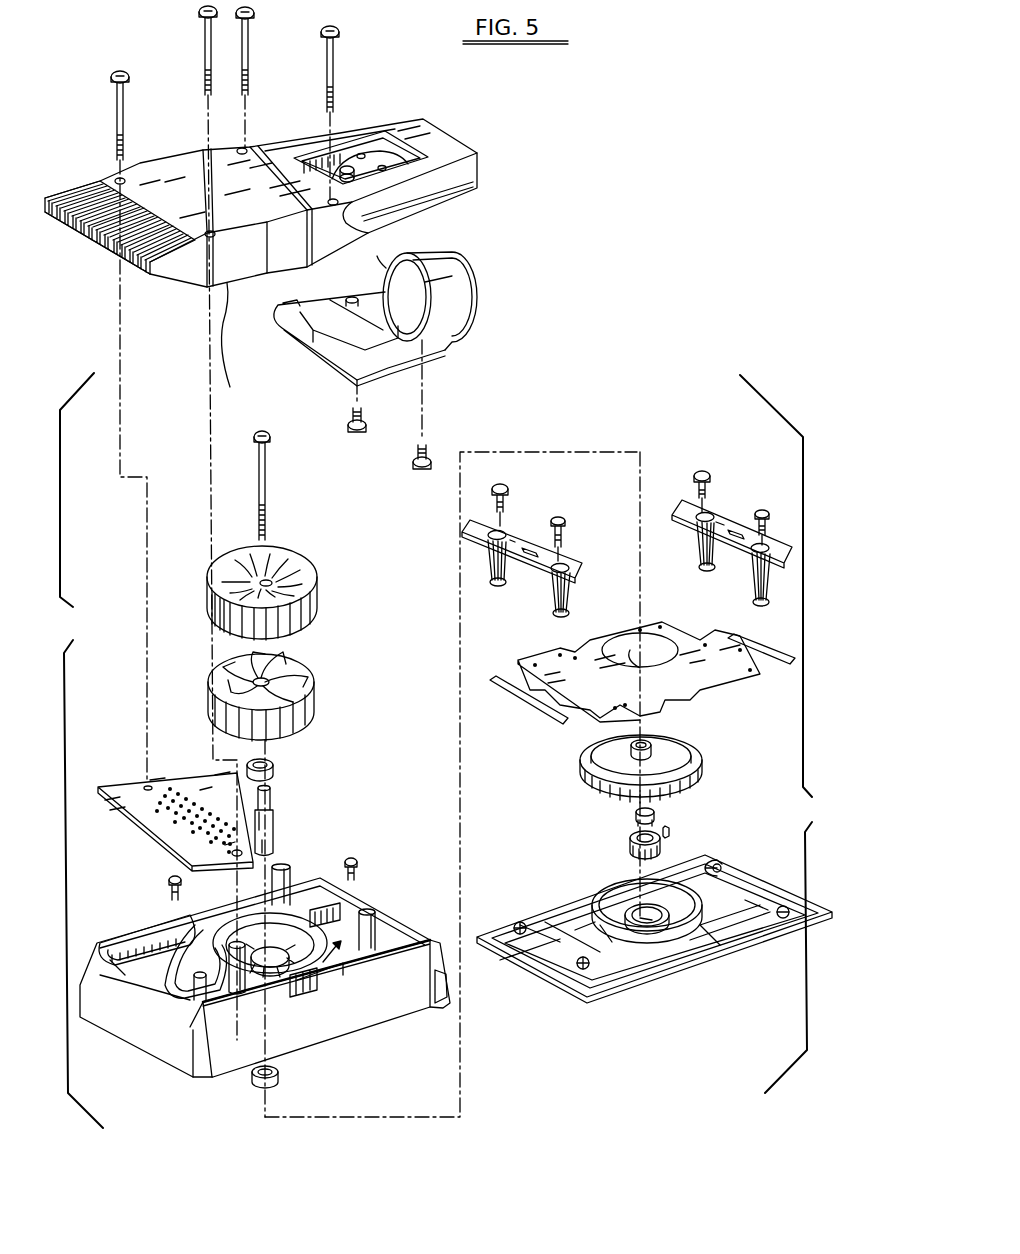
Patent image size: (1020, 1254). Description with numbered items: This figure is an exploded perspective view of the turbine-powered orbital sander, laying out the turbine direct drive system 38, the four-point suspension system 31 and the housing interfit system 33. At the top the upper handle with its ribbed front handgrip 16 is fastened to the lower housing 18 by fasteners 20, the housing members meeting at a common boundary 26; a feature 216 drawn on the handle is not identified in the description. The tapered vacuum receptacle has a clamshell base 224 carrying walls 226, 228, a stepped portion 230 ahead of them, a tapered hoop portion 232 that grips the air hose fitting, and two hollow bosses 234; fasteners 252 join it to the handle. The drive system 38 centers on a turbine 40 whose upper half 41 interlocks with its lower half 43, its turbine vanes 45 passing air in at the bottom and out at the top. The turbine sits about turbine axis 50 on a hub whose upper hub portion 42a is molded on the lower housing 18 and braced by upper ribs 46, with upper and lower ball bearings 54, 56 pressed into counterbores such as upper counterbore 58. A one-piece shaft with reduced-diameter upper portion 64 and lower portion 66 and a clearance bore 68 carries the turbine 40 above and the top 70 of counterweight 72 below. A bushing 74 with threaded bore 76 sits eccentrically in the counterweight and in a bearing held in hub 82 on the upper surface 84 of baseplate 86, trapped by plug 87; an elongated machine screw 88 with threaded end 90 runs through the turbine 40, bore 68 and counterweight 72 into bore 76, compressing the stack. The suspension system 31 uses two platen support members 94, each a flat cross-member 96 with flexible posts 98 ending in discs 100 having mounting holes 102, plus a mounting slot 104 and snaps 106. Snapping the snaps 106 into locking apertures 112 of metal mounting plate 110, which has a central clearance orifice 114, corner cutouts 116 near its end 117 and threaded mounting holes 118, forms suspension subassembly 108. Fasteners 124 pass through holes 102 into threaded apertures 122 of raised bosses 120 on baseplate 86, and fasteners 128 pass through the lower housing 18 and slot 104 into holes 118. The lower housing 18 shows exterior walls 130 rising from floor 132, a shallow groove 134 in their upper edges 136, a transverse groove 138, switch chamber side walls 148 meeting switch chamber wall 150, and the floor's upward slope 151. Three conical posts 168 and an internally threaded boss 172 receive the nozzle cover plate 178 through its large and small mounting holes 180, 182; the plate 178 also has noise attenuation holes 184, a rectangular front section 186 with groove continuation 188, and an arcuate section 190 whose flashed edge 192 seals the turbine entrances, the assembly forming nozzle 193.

The ribbed front handgrip 16 is at (75, 187).
The lower housing 18 is at (264, 952).
The fasteners 20 is at (330, 30).
The common boundary 26 is at (236, 344).
The suspension system 31 is at (776, 734).
The interfit system 33 is at (457, 228).
The turbine direct drive system 38 is at (81, 750).
The turbine 40 is at (263, 627).
The turbine upper half 41 is at (250, 552).
The upper hub portion 42a is at (260, 992).
The turbine lower half 43 is at (223, 710).
The turbine vanes 45 is at (253, 660).
The upper ribs 46 is at (247, 985).
The turbine axis 50 is at (260, 950).
The upper ball bearing 54 is at (275, 760).
The lower ball bearing 56 is at (277, 1080).
The upper counterbore 58 is at (285, 947).
The reduced diameter upper portion 64 is at (270, 830).
The reduced diameter lower portion 66 is at (273, 823).
The longitudinal clearance bore 68 is at (273, 787).
The top of counterweight 70 is at (688, 769).
The counterweight 72 is at (660, 745).
The bushing 74 is at (631, 845).
The threaded bore 76 is at (636, 815).
The hub 82 is at (654, 931).
The upper surface 84 is at (613, 920).
The baseplate 86 is at (760, 947).
The plug 87 is at (668, 830).
The elongated machine screw 88 is at (268, 488).
The threaded end 90 is at (266, 524).
The platen support members 94 is at (530, 534).
The flat cross-member 96 is at (568, 555).
The flexible post 98 is at (490, 565).
The disc 100 is at (490, 582).
The mounting hole 102 is at (497, 585).
The longitudinal mounting slot 104 is at (718, 505).
The locking tabs or snaps 106 is at (550, 567).
The suspension subassembly 108 is at (485, 605).
The metal mounting plate 110 is at (515, 738).
The locking apertures 112 is at (555, 705).
The central clearance orifice 114 is at (600, 715).
The corner cutouts 116 is at (495, 685).
The end 117 is at (540, 712).
The threaded mounting hole 118 is at (635, 713).
The raised boss 120 is at (738, 860).
The threaded aperture 122 is at (785, 906).
The fastener 124 is at (698, 478).
The fasteners 128 is at (358, 862).
The exterior walls 130 is at (113, 935).
The lower housing floor 132 is at (135, 947).
The shallow groove 134 is at (455, 918).
The upper edges 136 is at (220, 913).
The shallow groove 138 is at (320, 873).
The switch chamber side walls 148 is at (333, 900).
The switch chamber wall 150 is at (350, 907).
The upward slope 151 is at (337, 967).
The conical posts 168 is at (283, 898).
The internally threaded boss 172 is at (147, 940).
The nozzle cover plate 178 is at (115, 790).
The large mounting hole 180 is at (240, 947).
The small mounting hole 182 is at (148, 786).
The noise attenuation holes 184 is at (147, 813).
The rectangular front section 186 is at (148, 843).
The continuation of groove 188 is at (140, 785).
The arcuate section 190 is at (182, 772).
The flashed edge 192 is at (237, 780).
The nozzle 193 is at (132, 973).
The recess 216 is at (413, 112).
The clamshell base 224 is at (389, 323).
The wall 226 is at (357, 373).
The wall 228 is at (353, 303).
The stepped portion 230 is at (277, 308).
The tapered hoop portion 232 is at (457, 297).
The hollow bosses 234 is at (364, 269).
The fasteners 252 is at (413, 462).